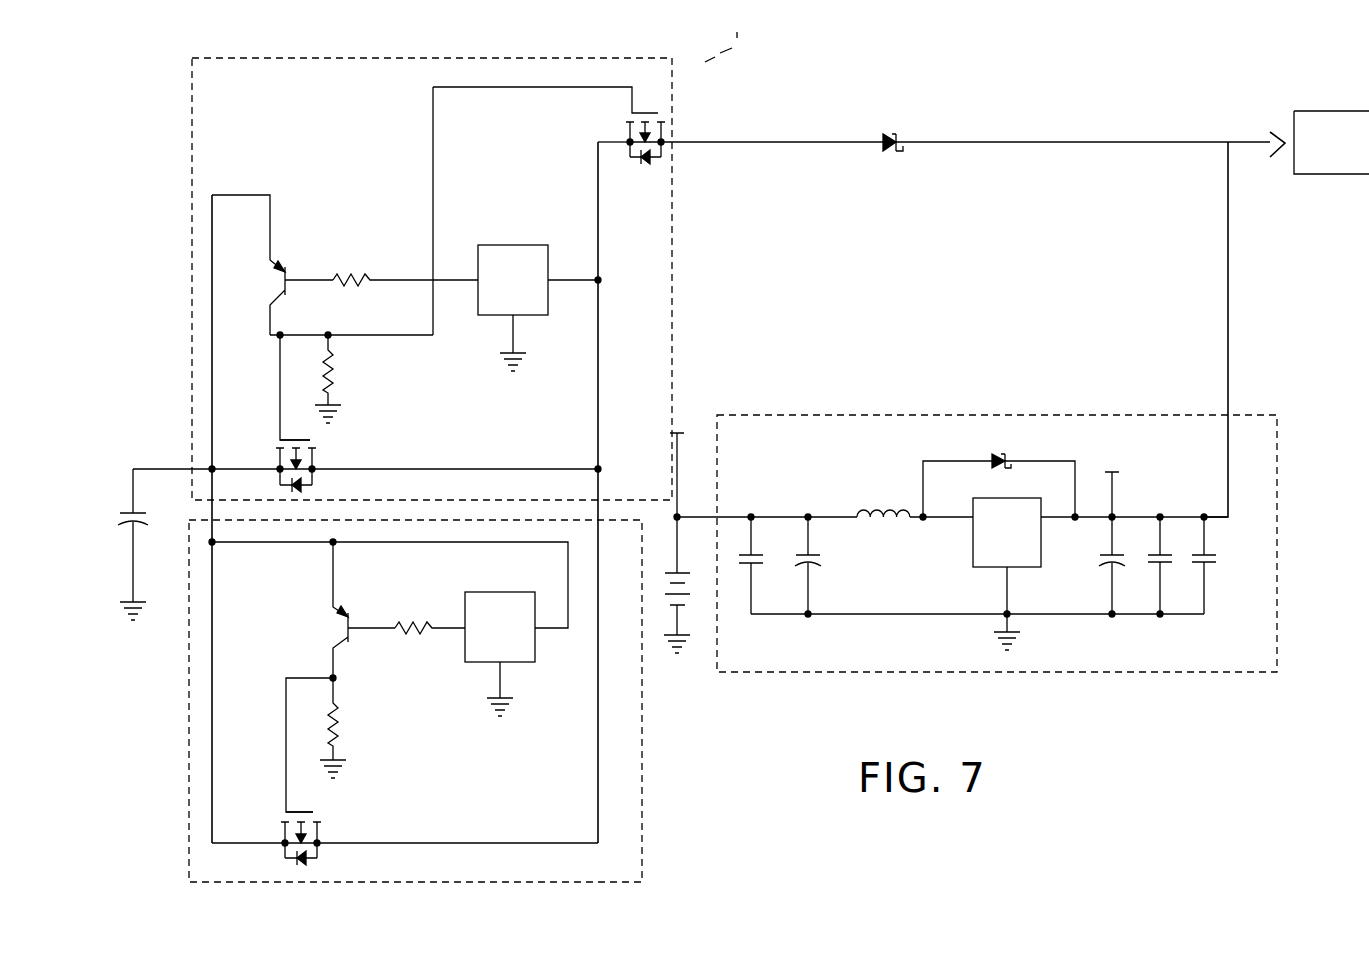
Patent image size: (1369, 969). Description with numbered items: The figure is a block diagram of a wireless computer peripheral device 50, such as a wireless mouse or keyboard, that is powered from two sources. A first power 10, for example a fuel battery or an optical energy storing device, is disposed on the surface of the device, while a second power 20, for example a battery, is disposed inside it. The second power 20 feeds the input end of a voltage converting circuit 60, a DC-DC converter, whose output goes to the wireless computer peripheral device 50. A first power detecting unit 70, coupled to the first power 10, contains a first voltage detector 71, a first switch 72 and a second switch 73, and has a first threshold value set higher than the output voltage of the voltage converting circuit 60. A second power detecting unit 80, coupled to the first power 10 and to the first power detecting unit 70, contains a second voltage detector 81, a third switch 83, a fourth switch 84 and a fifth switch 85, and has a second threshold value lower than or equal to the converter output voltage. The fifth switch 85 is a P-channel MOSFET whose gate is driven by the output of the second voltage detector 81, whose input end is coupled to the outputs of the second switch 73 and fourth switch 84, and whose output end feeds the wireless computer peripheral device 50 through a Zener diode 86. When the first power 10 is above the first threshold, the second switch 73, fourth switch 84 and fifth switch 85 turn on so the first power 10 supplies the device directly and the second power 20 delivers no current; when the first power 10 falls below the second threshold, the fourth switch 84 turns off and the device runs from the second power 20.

The first power 10 is at (124, 505).
The second power 20 is at (697, 590).
The wireless computer peripheral device 50 is at (1329, 123).
The voltage converting circuit 60 is at (858, 413).
The first power detecting unit 70 is at (479, 701).
The first voltage detector 71 is at (528, 642).
The first switch 72 is at (333, 626).
The second switch 73 is at (323, 835).
The second power detecting unit 80 is at (513, 256).
The second voltage detector 81 is at (513, 245).
The third switch 83 is at (284, 258).
The fourth switch 84 is at (322, 442).
The fifth switch 85 is at (642, 116).
The Zener diode 86 is at (887, 128).